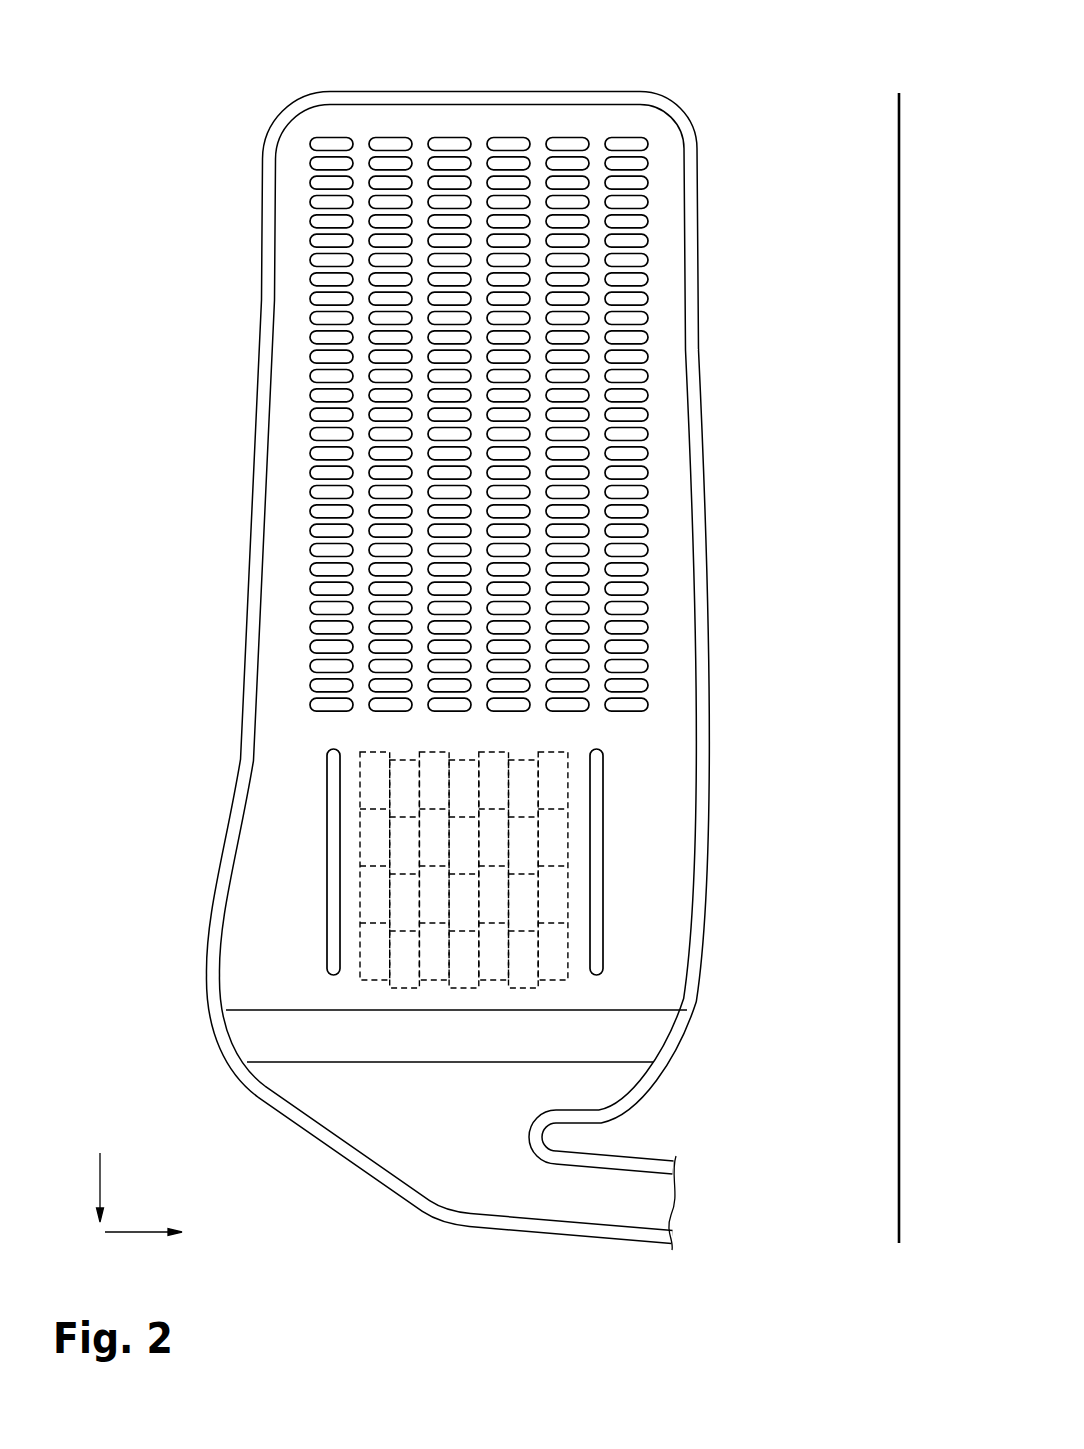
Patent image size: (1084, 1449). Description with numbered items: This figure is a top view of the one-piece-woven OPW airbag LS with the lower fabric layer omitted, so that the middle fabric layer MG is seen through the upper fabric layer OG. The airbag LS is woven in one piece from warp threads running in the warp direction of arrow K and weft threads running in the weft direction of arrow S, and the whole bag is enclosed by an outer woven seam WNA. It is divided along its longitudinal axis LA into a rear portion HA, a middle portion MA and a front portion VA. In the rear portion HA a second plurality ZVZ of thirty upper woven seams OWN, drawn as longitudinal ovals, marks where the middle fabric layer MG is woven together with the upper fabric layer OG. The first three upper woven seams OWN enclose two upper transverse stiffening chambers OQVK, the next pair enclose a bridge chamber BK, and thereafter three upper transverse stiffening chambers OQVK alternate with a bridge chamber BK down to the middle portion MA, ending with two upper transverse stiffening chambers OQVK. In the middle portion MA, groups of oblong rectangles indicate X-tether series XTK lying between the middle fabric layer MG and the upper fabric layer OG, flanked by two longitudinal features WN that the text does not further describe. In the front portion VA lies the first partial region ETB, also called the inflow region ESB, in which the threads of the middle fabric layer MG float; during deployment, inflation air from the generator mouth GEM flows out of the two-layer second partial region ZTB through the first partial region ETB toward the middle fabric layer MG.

The OPW airbag LS is at (441, 672).
The second plurality ZVZ is at (372, 118).
The upper fabric layer OG is at (482, 125).
The outer woven seam WNA is at (653, 98).
The upper woven seams OWN is at (320, 185).
The bridge chamber BK is at (320, 194).
The upper transverse stiffening chamber OQVK is at (320, 232).
The middle fabric layer MG is at (292, 458).
The rear portion HA is at (812, 708).
The longitudinal axis LA is at (899, 642).
The middle portion MA is at (812, 1005).
The front portion VA is at (812, 1012).
The wall groove WN is at (332, 805).
The X-tether series XTK is at (608, 808).
The first partial region ETB is at (265, 1032).
The inflow region ESB is at (293, 1085).
The second partial region ZTB is at (480, 1198).
The generator mouth GEM is at (652, 1205).
The warp direction arrow K is at (100, 1177).
The weft direction arrow S is at (143, 1236).